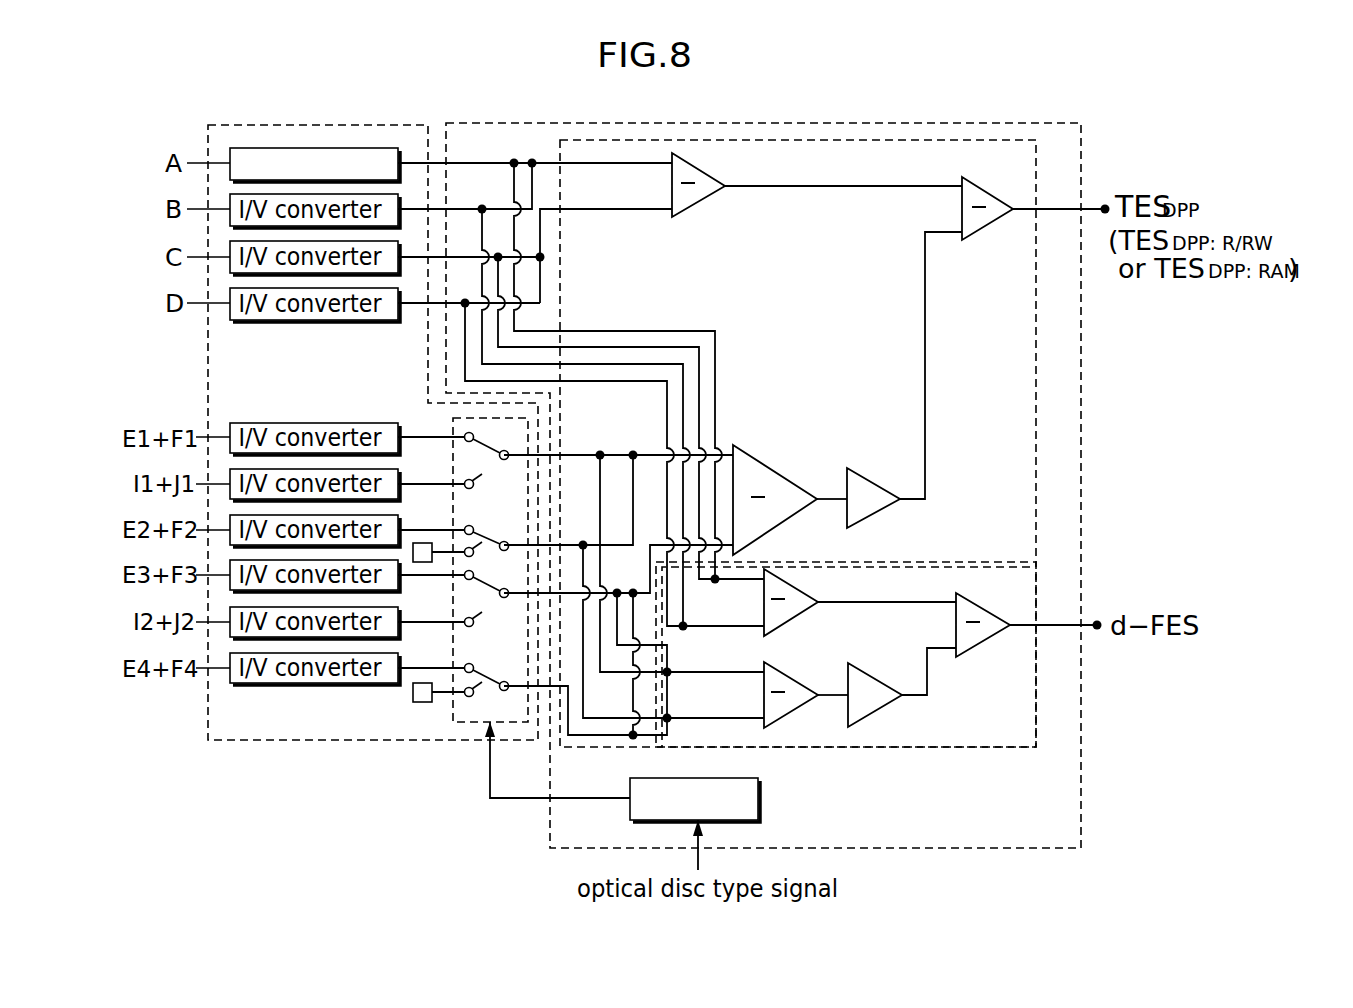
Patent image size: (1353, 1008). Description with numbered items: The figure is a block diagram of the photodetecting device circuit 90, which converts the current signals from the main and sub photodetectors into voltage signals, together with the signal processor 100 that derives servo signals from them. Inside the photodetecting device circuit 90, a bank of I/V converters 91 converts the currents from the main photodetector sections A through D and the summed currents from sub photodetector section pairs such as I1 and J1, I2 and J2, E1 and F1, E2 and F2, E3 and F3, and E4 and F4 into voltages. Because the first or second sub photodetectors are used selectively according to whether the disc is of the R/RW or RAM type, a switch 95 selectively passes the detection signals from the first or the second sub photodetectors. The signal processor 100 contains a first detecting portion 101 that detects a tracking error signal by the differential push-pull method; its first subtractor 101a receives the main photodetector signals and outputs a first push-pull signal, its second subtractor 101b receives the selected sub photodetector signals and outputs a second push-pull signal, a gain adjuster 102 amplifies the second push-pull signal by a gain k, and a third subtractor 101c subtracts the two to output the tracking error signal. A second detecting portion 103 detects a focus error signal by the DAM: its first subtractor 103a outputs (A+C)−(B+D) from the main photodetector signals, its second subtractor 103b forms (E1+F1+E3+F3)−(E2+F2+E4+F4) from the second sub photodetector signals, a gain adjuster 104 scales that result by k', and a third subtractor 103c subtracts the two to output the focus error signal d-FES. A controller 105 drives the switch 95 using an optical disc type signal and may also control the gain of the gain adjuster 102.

The photodetecting device circuit 90 is at (253, 740).
The current-to-voltage (I/V) converter 91 is at (275, 146).
The switch 95 is at (462, 722).
The signal processor 100 is at (1081, 808).
The first detecting portion 101 is at (1036, 173).
The first subtractor 101a is at (702, 200).
The second subtractor 101b is at (762, 460).
The third subtractor 101c is at (988, 228).
The gain adjuster 102 is at (862, 470).
The second detecting portion 103 is at (1037, 699).
The first subtractor 103a is at (822, 610).
The second subtractor 103b is at (790, 717).
The third subtractor 103c is at (985, 610).
The gain adjuster 104 is at (877, 710).
The controller 105 is at (758, 803).